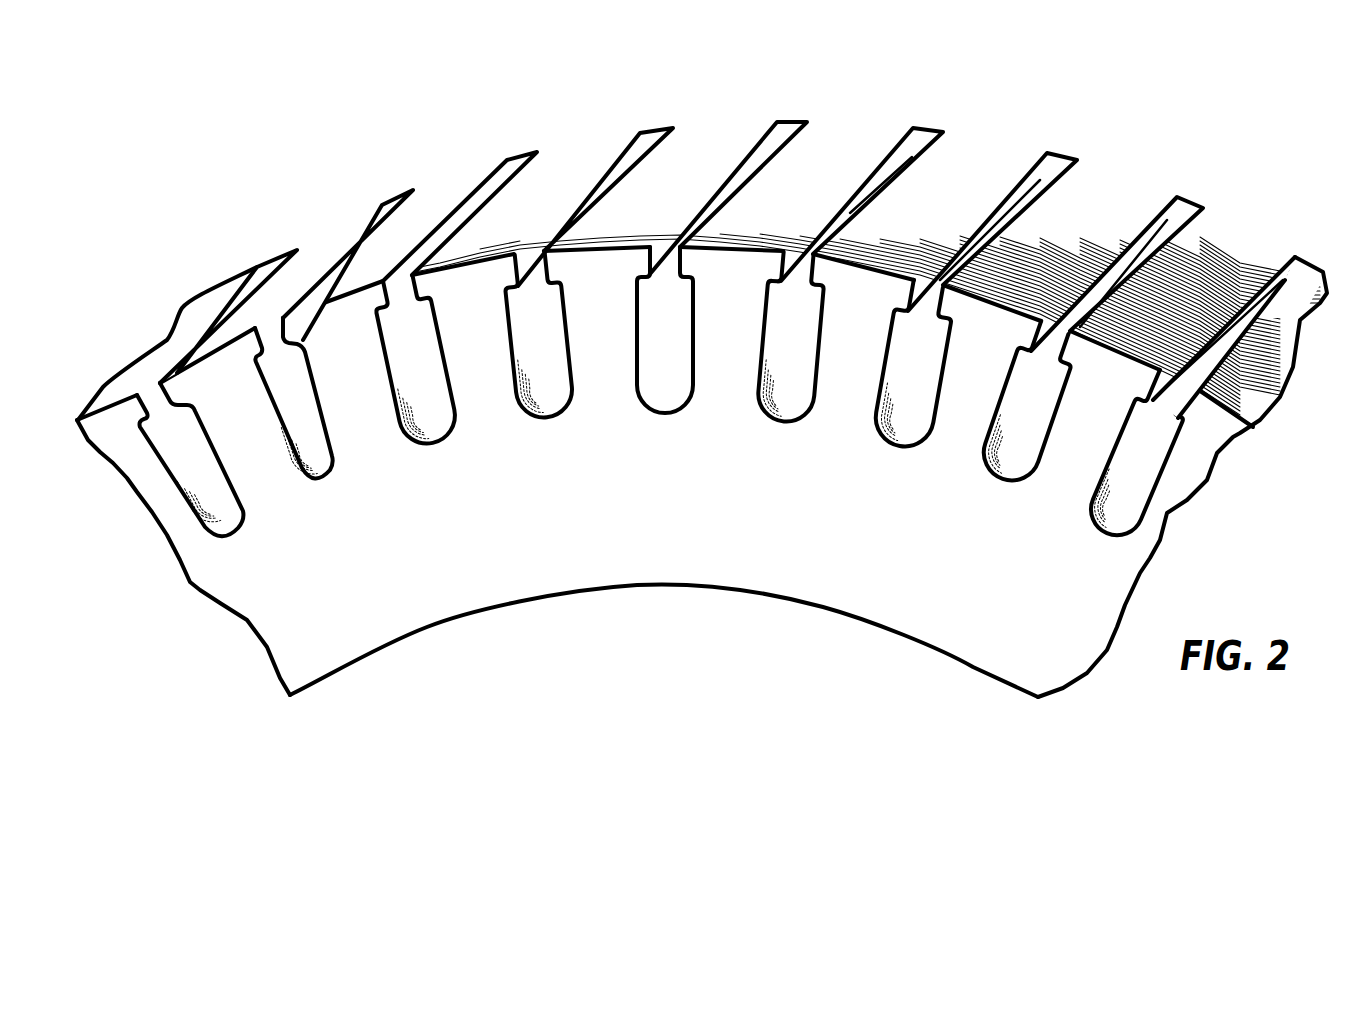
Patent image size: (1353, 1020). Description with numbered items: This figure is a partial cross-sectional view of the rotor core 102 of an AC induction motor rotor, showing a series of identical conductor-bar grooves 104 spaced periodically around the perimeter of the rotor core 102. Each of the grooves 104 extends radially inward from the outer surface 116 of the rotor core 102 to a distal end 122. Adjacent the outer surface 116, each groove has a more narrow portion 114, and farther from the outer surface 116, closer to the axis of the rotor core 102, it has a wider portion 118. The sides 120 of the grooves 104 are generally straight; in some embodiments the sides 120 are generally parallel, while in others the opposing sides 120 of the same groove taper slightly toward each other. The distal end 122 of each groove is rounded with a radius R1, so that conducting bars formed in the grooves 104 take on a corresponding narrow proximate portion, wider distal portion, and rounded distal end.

The rotor core 102 is at (990, 564).
The grooves 104 is at (600, 167).
The narrow portion 114 is at (182, 380).
The outer surface 116 is at (303, 260).
The wider portion 118 is at (342, 405).
The sides 120 is at (577, 344).
The distal end 122 is at (669, 423).
The radius R1 is at (785, 399).